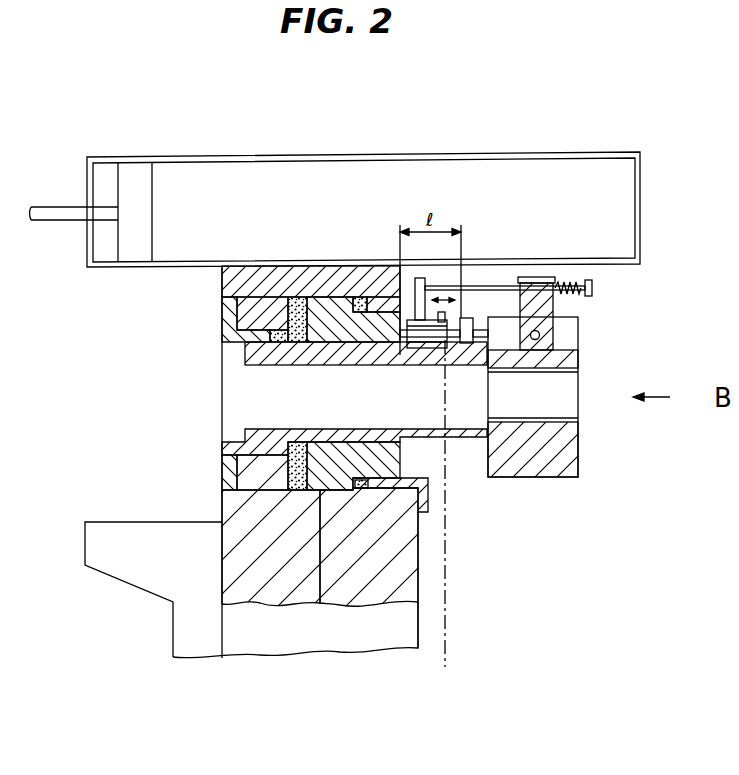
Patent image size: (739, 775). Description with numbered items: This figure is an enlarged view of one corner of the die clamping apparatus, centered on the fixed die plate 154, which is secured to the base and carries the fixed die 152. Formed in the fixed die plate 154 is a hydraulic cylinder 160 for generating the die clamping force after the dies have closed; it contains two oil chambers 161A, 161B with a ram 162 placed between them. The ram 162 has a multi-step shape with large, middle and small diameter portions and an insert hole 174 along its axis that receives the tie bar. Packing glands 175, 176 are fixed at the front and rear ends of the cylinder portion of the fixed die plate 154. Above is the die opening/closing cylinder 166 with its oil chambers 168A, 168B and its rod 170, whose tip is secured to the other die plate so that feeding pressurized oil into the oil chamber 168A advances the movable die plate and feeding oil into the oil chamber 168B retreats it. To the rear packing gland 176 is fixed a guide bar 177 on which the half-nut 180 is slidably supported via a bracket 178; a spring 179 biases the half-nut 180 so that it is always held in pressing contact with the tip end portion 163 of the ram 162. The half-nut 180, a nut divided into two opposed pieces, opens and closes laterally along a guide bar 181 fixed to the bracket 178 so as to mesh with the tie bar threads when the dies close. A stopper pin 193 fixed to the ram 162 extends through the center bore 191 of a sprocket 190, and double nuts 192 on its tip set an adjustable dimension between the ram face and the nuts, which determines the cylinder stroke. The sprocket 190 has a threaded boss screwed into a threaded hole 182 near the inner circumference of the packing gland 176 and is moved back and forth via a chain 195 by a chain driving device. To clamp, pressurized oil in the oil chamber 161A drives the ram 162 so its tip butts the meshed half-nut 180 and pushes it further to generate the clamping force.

The fixed die 152 is at (145, 583).
The fixed die plate 154 is at (393, 640).
The hydraulic cylinder 160 is at (310, 620).
The oil chamber 161A is at (293, 492).
The oil chamber 161B is at (388, 482).
The ram 162 is at (419, 613).
The tip end portion 163 is at (520, 478).
The die opening/closing cylinder 166 is at (627, 188).
The oil chamber 168A is at (107, 171).
The oil chamber 168B is at (258, 178).
The rod 170 is at (52, 218).
The insert hole 174 is at (250, 365).
The packing gland 175 is at (232, 453).
The packing gland 176 is at (428, 503).
The guide bar 177 is at (594, 289).
The bracket 178 is at (543, 282).
The spring 179 is at (565, 295).
The half-nut 180 is at (565, 417).
The guide bar 181 is at (540, 335).
The threaded hole 182 is at (420, 278).
The sprocket 190 is at (443, 352).
The center bore 191 is at (447, 320).
The double nuts 192 is at (445, 313).
The stopper pin 193 is at (472, 318).
The chain 195 is at (446, 595).